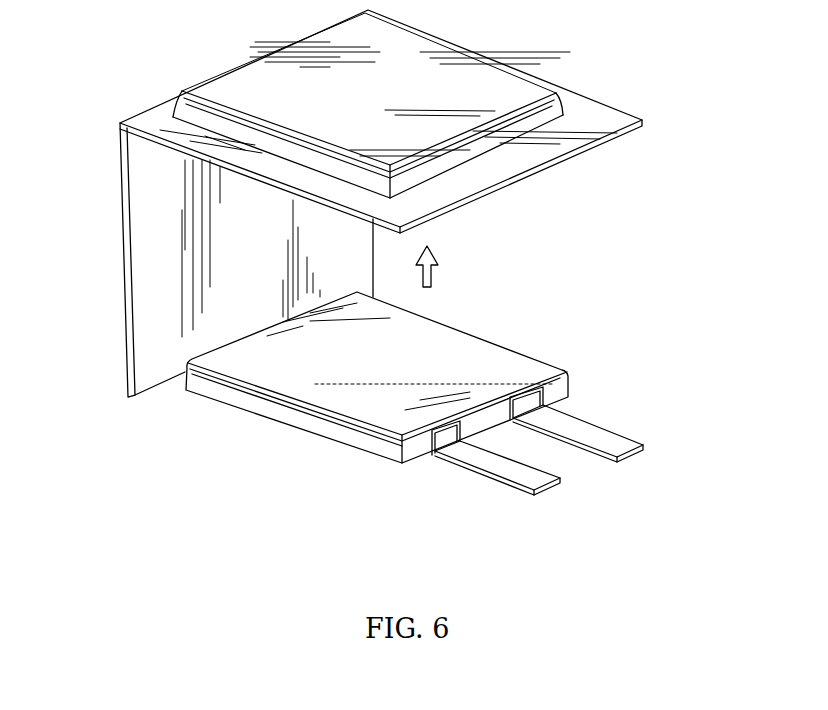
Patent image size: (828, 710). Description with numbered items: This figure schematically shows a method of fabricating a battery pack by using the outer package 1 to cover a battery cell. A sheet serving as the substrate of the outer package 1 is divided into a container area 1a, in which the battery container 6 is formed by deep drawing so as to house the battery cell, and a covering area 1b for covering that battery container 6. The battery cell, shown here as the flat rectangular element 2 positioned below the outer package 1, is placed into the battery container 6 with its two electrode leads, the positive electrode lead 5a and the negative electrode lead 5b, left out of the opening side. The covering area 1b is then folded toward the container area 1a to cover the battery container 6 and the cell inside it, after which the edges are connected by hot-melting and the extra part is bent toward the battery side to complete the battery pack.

The outer package 1 is at (367, 203).
The container area 1a is at (603, 133).
The covering area 1b is at (122, 252).
The battery cell 2 is at (477, 343).
The positive electrode lead 5a is at (602, 433).
The negative electrode lead 5b is at (488, 467).
The battery container 6 is at (440, 60).